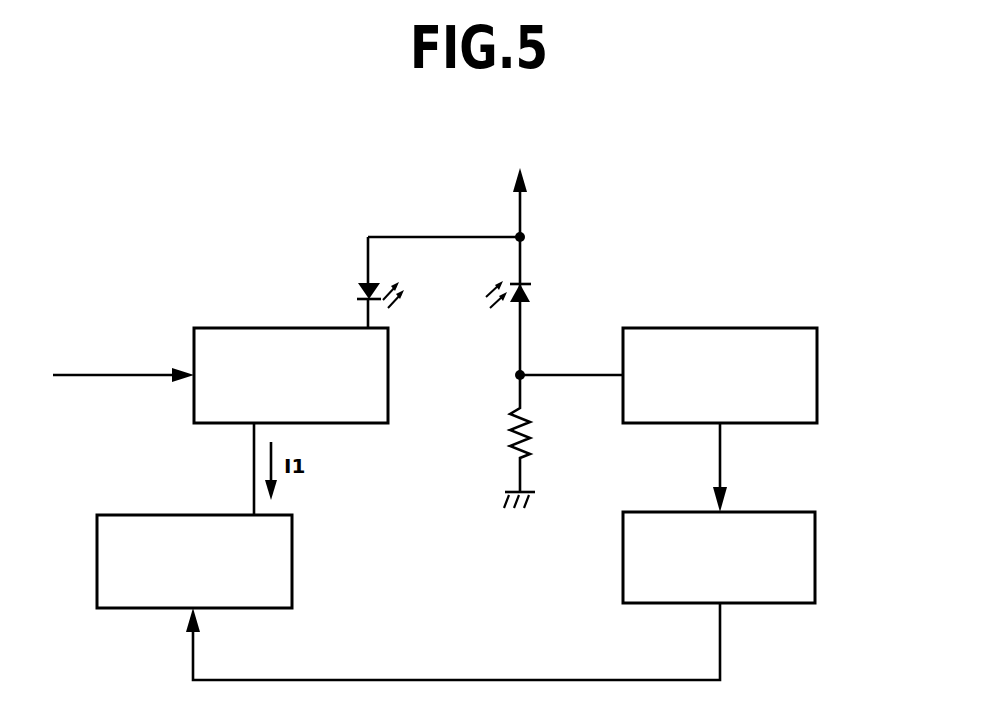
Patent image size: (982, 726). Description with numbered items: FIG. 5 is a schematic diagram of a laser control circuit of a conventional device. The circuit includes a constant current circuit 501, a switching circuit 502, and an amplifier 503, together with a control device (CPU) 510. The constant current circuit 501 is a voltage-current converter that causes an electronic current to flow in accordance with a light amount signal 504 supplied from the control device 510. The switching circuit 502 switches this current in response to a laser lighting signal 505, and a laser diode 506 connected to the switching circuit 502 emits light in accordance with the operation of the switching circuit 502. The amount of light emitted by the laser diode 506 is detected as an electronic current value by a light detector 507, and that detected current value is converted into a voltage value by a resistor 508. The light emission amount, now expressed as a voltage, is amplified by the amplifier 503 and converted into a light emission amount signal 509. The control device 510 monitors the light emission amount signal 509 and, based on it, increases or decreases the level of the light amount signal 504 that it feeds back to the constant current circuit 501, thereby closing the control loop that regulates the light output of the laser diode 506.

The constant current circuit 501 is at (140, 515).
The switching circuit 502 is at (252, 328).
The amplifier 503 is at (772, 328).
The light amount signal 504 is at (368, 680).
The laser lighting signal 505 is at (95, 375).
The laser diode 506 is at (368, 285).
The light detector 507 is at (528, 285).
The resistor 508 is at (528, 440).
The light emission amount signal 509 is at (720, 468).
The control device (CPU) 510 is at (815, 558).